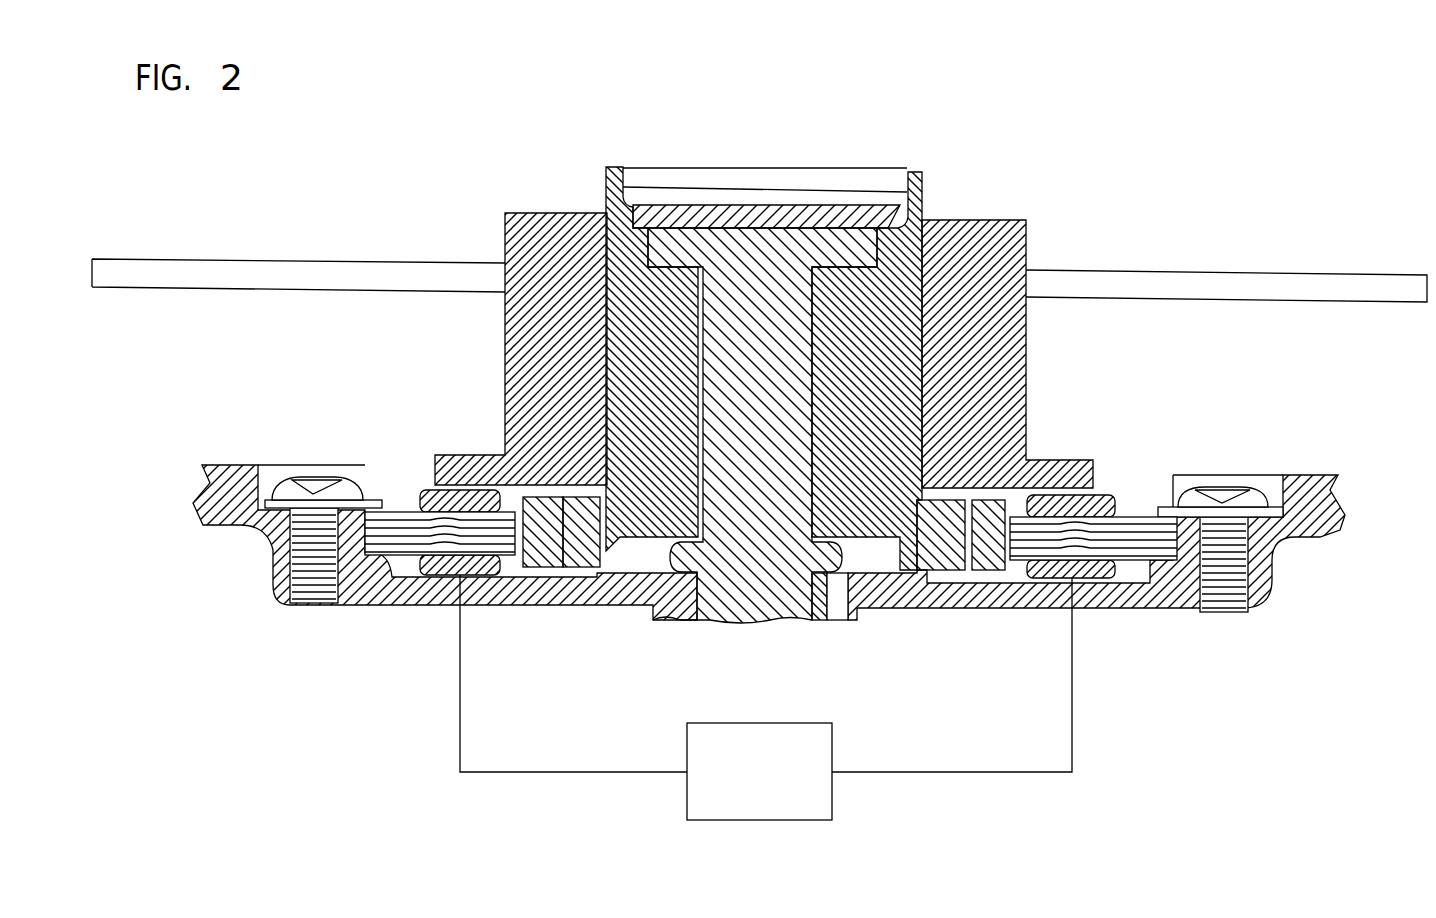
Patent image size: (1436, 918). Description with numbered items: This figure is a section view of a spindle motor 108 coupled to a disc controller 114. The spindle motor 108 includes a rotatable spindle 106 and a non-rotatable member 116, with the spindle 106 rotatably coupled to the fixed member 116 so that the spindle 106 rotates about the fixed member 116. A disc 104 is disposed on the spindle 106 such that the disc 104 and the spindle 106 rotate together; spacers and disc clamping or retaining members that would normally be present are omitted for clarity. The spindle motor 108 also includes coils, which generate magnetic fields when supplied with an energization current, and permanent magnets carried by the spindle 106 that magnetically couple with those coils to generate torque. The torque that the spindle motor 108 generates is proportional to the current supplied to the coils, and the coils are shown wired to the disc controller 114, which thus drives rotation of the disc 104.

The disc 104 is at (1210, 270).
The spindle 106 is at (980, 218).
The spindle motor 108 is at (928, 175).
The disc controller 114 is at (832, 743).
The non-rotatable member 116 is at (780, 620).